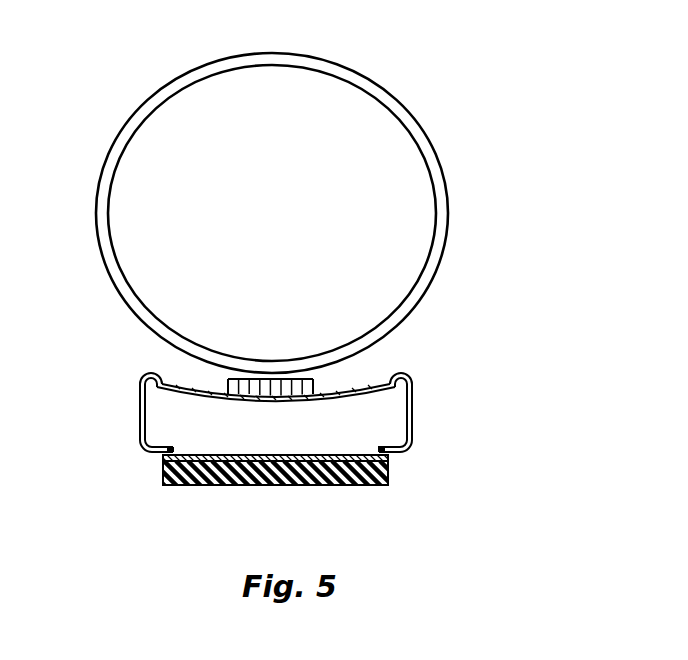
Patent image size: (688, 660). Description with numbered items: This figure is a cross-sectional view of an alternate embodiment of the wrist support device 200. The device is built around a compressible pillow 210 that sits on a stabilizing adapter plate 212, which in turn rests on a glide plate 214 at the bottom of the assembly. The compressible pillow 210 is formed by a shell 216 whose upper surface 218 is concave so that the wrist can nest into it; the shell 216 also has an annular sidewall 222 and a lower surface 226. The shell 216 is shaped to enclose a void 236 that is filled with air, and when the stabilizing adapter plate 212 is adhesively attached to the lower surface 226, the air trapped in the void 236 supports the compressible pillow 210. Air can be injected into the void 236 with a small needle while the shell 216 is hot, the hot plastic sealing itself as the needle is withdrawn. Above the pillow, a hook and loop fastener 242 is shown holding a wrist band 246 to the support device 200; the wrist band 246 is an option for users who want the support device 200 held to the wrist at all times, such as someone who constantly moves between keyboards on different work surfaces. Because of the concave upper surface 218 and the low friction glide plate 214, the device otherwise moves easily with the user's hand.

The wrist support device 200 is at (492, 380).
The compressible pillow 210 is at (274, 422).
The stabilizing adapter plate 212 is at (314, 501).
The glide plate 214 is at (388, 470).
The shell 216 is at (140, 411).
The upper surface 218 is at (176, 380).
The annular sidewall 222 is at (141, 432).
The lower surface 226 is at (150, 453).
The void 236 is at (340, 415).
The hook and loop fastener 242 is at (270, 395).
The wrist band 246 is at (422, 133).